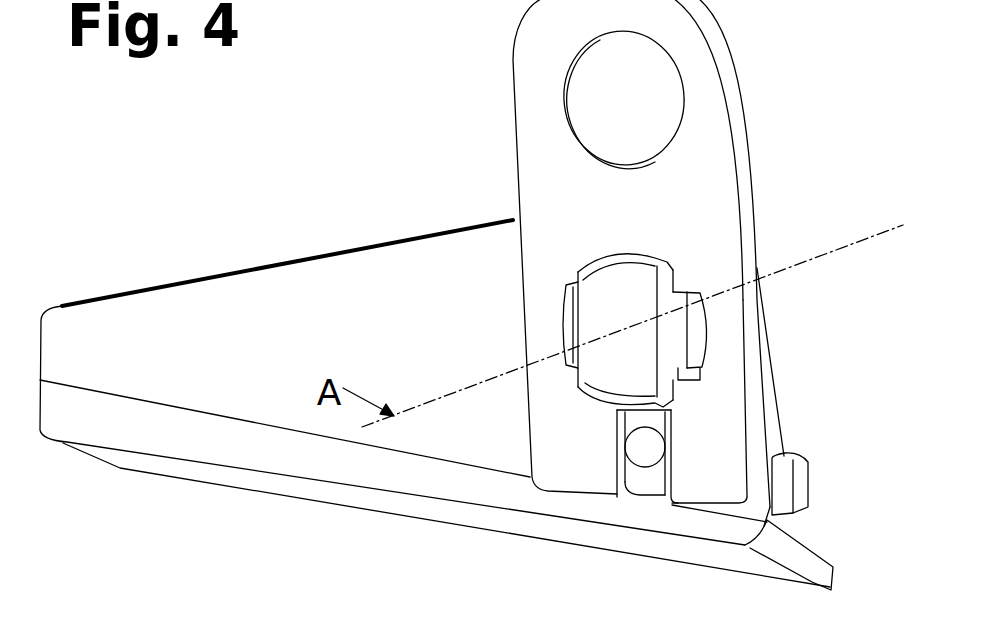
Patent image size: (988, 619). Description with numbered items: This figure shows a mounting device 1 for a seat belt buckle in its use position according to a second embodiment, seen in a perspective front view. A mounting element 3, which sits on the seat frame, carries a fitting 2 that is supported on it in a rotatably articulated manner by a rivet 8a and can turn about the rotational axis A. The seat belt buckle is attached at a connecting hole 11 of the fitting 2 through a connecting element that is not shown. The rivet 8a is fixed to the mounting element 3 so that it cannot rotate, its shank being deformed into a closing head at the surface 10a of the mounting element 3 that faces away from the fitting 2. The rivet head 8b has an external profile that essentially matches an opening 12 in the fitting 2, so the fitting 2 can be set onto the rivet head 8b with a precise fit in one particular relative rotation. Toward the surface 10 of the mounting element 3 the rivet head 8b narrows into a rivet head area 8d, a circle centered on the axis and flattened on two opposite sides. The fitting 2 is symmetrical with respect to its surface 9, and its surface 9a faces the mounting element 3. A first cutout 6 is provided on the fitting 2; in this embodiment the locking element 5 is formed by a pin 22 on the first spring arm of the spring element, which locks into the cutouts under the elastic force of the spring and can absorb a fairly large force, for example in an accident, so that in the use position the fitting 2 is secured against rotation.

The holding device 1 is at (364, 181).
The fitting 2 is at (533, 60).
The mounting element 3 is at (75, 328).
The locking element 5 is at (645, 447).
The first cutout 6 is at (627, 494).
The rivet 8a is at (690, 263).
The rivet head 8b is at (580, 263).
The rivet head area 8d is at (705, 357).
The surface of the fitting 9 is at (535, 153).
The surface of the fitting facing the mounting element 9a is at (752, 108).
The surface of the mounting element 10 is at (153, 309).
The surface of the mounting element opposite from the fitting 10a is at (207, 274).
The connecting hole 11 is at (655, 95).
The opening 12 is at (698, 309).
The pin 22 is at (648, 460).